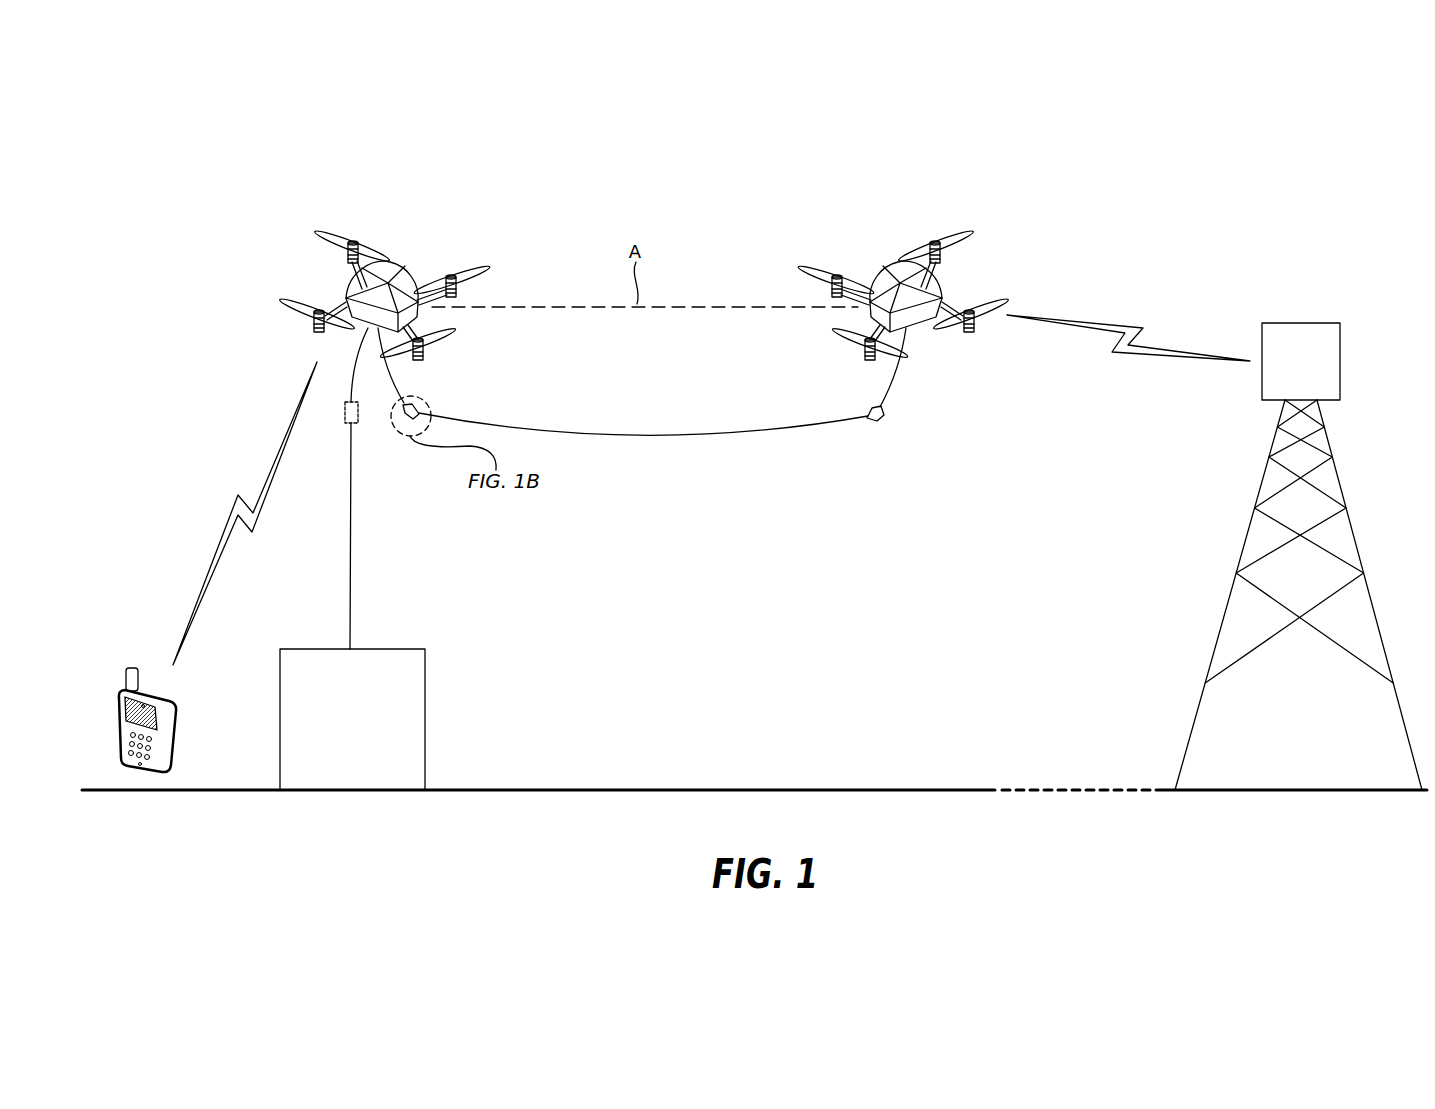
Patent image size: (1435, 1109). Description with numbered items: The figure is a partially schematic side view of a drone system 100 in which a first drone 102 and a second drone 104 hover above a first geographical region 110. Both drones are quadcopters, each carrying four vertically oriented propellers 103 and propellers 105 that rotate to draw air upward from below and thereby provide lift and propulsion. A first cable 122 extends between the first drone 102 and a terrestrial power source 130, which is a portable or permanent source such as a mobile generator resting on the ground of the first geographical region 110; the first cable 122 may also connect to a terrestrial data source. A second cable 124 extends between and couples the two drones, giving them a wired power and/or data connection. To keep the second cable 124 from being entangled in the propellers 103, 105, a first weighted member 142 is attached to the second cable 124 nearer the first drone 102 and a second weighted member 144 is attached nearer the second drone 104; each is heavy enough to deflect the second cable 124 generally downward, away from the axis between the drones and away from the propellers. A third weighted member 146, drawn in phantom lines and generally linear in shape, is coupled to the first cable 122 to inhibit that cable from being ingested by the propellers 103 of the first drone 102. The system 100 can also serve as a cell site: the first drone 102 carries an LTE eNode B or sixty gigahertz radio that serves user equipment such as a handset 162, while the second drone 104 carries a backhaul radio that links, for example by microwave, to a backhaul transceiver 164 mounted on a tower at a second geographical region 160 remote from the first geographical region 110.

The drone system 100 is at (228, 184).
The first drone 102 is at (396, 262).
The propellers 103 is at (482, 264).
The second drone 104 is at (890, 262).
The propellers 105 is at (806, 265).
The first geographical region 110 is at (697, 684).
The first cable 122 is at (350, 599).
The second cable 124 is at (645, 435).
The terrestrial power source 130 is at (352, 719).
The first weighted member 142 is at (419, 405).
The second weighted member 144 is at (872, 408).
The third weighted member 146 is at (358, 420).
The second geographical region 160 is at (1297, 778).
The handset 162 is at (131, 667).
The backhaul transceiver 164 is at (1301, 361).